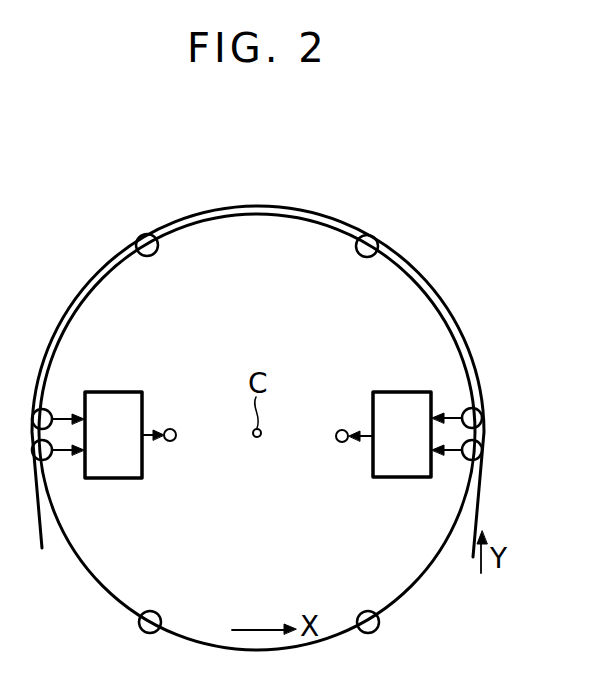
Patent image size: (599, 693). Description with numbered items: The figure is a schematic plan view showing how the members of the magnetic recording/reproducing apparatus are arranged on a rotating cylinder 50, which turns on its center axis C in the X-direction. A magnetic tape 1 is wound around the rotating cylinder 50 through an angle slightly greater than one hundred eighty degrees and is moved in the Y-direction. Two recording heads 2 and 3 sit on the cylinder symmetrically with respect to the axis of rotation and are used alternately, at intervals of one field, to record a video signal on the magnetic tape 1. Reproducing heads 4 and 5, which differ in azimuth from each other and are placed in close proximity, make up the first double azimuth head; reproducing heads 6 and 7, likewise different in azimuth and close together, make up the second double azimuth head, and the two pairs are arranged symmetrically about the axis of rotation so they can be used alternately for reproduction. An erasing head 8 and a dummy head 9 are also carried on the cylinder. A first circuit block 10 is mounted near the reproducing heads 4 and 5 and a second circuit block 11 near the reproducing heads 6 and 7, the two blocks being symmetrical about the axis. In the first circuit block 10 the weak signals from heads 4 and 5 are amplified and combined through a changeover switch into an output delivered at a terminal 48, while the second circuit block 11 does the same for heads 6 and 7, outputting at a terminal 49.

The magnetic tape 1 is at (483, 478).
The rotating cylinder 50 is at (424, 573).
The recording magnetic head 2 is at (158, 613).
The recording magnetic head 3 is at (360, 254).
The reproducing magnetic head 4 is at (46, 410).
The reproducing magnetic head 5 is at (50, 460).
The reproducing magnetic head 6 is at (468, 460).
The reproducing magnetic head 7 is at (467, 410).
The erasing magnetic head 8 is at (364, 613).
The dummy head 9 is at (158, 253).
The first circuit block 10 is at (109, 391).
The second circuit block 11 is at (401, 391).
The terminal 48 is at (172, 428).
The terminal 49 is at (344, 429).